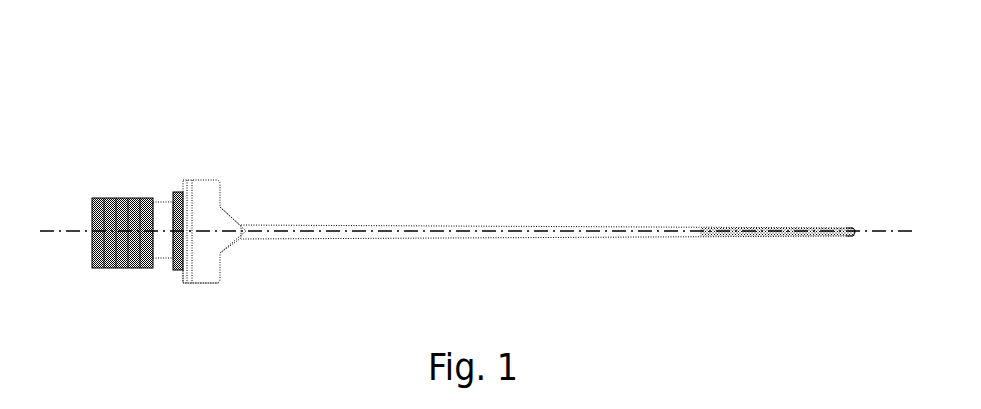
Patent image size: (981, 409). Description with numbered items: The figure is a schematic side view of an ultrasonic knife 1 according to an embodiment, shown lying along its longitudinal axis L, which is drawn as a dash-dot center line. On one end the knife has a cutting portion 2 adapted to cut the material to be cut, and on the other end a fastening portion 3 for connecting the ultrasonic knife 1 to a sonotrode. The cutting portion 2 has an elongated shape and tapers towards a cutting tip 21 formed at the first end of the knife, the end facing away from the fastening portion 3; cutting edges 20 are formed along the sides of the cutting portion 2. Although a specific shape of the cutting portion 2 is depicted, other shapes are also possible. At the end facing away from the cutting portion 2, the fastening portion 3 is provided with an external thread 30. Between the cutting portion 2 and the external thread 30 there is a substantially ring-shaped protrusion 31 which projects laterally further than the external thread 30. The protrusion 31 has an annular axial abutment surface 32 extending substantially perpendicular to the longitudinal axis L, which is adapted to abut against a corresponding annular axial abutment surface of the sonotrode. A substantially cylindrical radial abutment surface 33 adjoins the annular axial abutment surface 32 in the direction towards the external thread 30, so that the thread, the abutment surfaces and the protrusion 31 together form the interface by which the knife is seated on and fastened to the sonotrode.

The ultrasonic knife 1 is at (498, 92).
The cutting portion 2 is at (583, 225).
The fastening portion 3 is at (150, 210).
The cutting edges 20 is at (723, 232).
The cutting tip 21 is at (856, 231).
The external thread 30 is at (130, 257).
The ring-shaped protrusion 31 is at (202, 180).
The annular axial abutment surface 32 is at (193, 281).
The radial abutment surface 33 is at (183, 190).
The longitudinal axis L is at (65, 231).